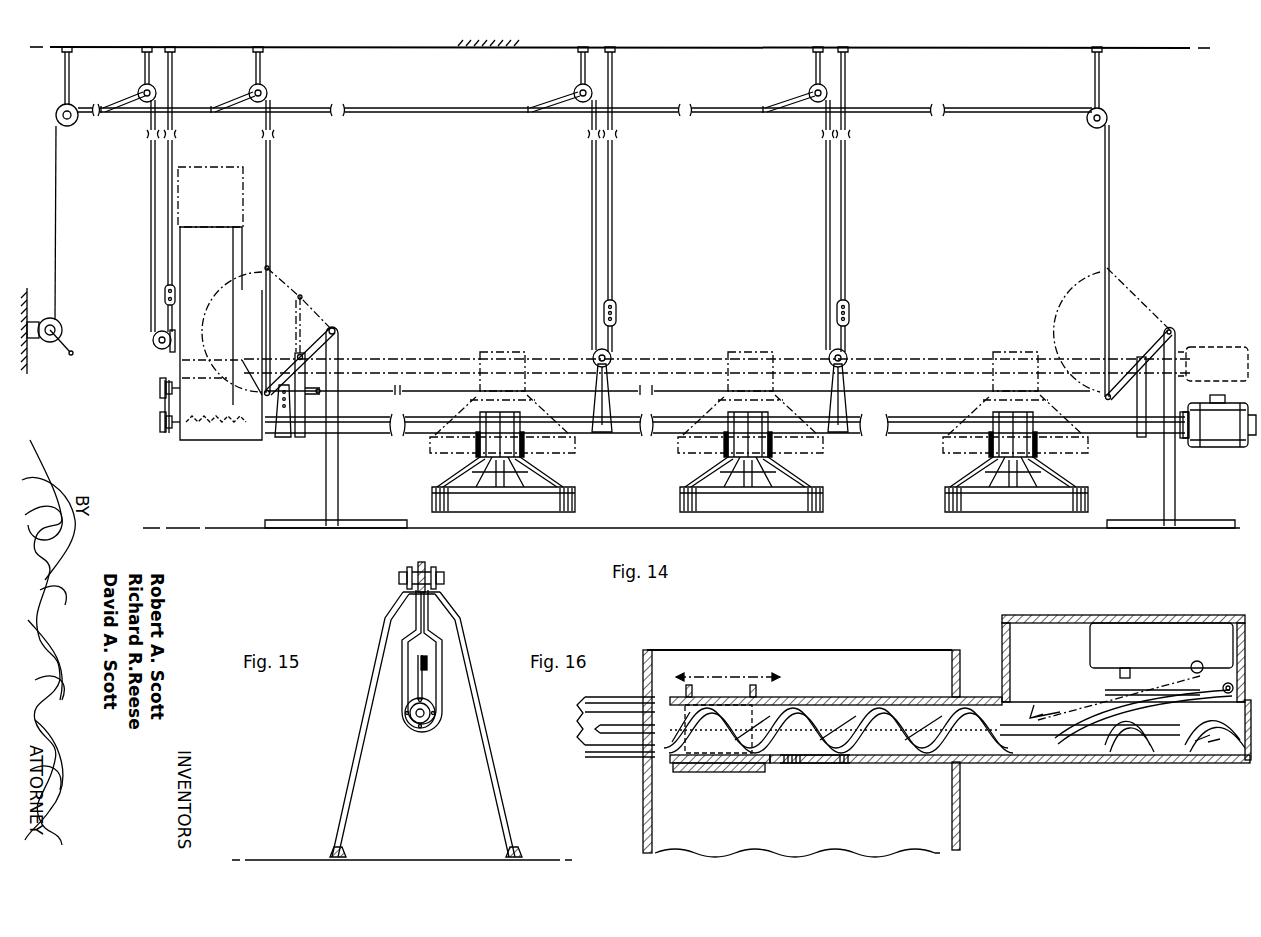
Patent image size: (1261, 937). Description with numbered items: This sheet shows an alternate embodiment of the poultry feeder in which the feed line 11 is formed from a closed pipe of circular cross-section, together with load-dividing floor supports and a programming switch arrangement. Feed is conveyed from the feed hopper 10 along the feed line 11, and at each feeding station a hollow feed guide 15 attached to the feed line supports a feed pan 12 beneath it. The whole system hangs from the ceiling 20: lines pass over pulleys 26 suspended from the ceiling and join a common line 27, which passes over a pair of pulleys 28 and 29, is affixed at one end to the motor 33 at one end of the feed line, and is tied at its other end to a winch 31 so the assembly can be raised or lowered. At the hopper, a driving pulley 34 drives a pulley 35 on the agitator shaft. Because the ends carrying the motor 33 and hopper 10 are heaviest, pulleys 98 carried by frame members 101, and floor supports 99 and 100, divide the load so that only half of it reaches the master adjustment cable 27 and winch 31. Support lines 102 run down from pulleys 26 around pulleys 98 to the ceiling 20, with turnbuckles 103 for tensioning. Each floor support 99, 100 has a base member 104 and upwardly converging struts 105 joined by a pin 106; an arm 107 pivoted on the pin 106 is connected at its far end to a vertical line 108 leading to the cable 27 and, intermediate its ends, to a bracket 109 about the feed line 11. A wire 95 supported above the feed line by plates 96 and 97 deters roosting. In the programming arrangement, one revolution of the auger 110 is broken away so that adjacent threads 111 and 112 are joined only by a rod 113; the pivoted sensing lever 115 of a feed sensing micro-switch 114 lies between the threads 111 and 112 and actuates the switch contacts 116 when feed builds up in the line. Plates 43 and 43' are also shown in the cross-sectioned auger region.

In FIG. 14, the feed hopper 10 is at (209, 232).
In FIG. 14, the feed line 11 is at (727, 441).
In FIG. 15, the feed line 11 is at (430, 722).
In FIG. 16, the feed line 11 is at (612, 758).
In FIG. 14, the feed pan 12 is at (680, 503).
In FIG. 14, the feed guide 15 is at (520, 445).
In FIG. 16, the feed guide 15 is at (643, 818).
In FIG. 14, the ceiling 20 is at (488, 49).
In FIG. 14, the pulley 26 is at (266, 88).
In FIG. 14, the common line 27 is at (410, 113).
In FIG. 14, the pulley 28 is at (74, 124).
In FIG. 14, the pulley 29 is at (1088, 124).
In FIG. 14, the winch 31 is at (64, 322).
In FIG. 14, the motor 33 is at (1208, 430).
In FIG. 14, the driving pulley 34 is at (158, 424).
In FIG. 14, the pulley 35 is at (158, 386).
In FIG. 16, the plate 43 is at (815, 778).
In FIG. 16, the plate 43' is at (719, 786).
In FIG. 14, the wire 95 is at (678, 392).
In FIG. 15, the wire 95 is at (428, 660).
In FIG. 14, the plate 96 is at (283, 438).
In FIG. 15, the plate 96 is at (420, 690).
In FIG. 14, the plate 97 is at (1097, 428).
In FIG. 14, the pulley 98 is at (152, 344).
In FIG. 14, the floor support 99 is at (339, 472).
In FIG. 14, the floor support 100 is at (1162, 492).
In FIG. 14, the frame member 101 is at (175, 341).
In FIG. 14, the support line 102 is at (590, 160).
In FIG. 14, the turnbuckle 103 is at (176, 292).
In FIG. 14, the base member 104 is at (357, 520).
In FIG. 15, the base member 104 is at (340, 850).
In FIG. 15, the strut 105 is at (498, 796).
In FIG. 14, the pin 106 is at (336, 328).
In FIG. 15, the pin 106 is at (399, 580).
In FIG. 14, the arm 107 is at (293, 285).
In FIG. 15, the arm 107 is at (424, 562).
In FIG. 14, the vertical line 108 is at (272, 232).
In FIG. 14, the bracket 109 is at (305, 405).
In FIG. 15, the bracket 109 is at (430, 620).
In FIG. 16, the auger 110 is at (878, 715).
In FIG. 16, the thread 111 is at (990, 715).
In FIG. 16, the thread 112 is at (1120, 720).
In FIG. 16, the rod 113 is at (1030, 737).
In FIG. 16, the feed sensing micro-switch 114 is at (1102, 652).
In FIG. 16, the sensing lever 115 is at (1136, 700).
In FIG. 16, the switch contacts 116 is at (1110, 678).